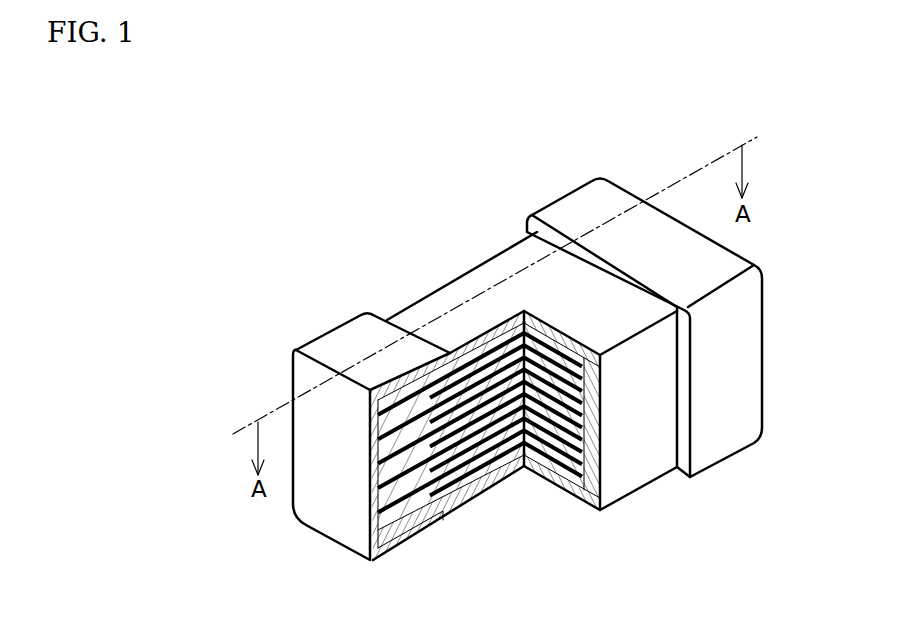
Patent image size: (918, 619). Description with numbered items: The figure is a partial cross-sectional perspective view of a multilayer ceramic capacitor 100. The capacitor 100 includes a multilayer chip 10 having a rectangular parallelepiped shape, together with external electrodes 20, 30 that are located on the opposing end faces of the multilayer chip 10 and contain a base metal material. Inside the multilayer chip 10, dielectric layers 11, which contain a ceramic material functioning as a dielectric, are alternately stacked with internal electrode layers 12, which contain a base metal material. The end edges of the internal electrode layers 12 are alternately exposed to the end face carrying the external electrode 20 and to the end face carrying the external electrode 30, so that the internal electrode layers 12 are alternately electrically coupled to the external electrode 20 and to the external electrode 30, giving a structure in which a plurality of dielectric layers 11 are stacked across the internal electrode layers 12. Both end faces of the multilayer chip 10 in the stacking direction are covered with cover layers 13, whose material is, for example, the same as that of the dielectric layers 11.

The multilayer ceramic capacitor 100 is at (840, 124).
The multilayer chip 10 is at (415, 298).
The dielectric layer 11 is at (468, 488).
The internal electrode layer 12 is at (445, 507).
The cover layer 13 is at (502, 263).
The external electrode 20 is at (340, 325).
The external electrode 30 is at (568, 208).